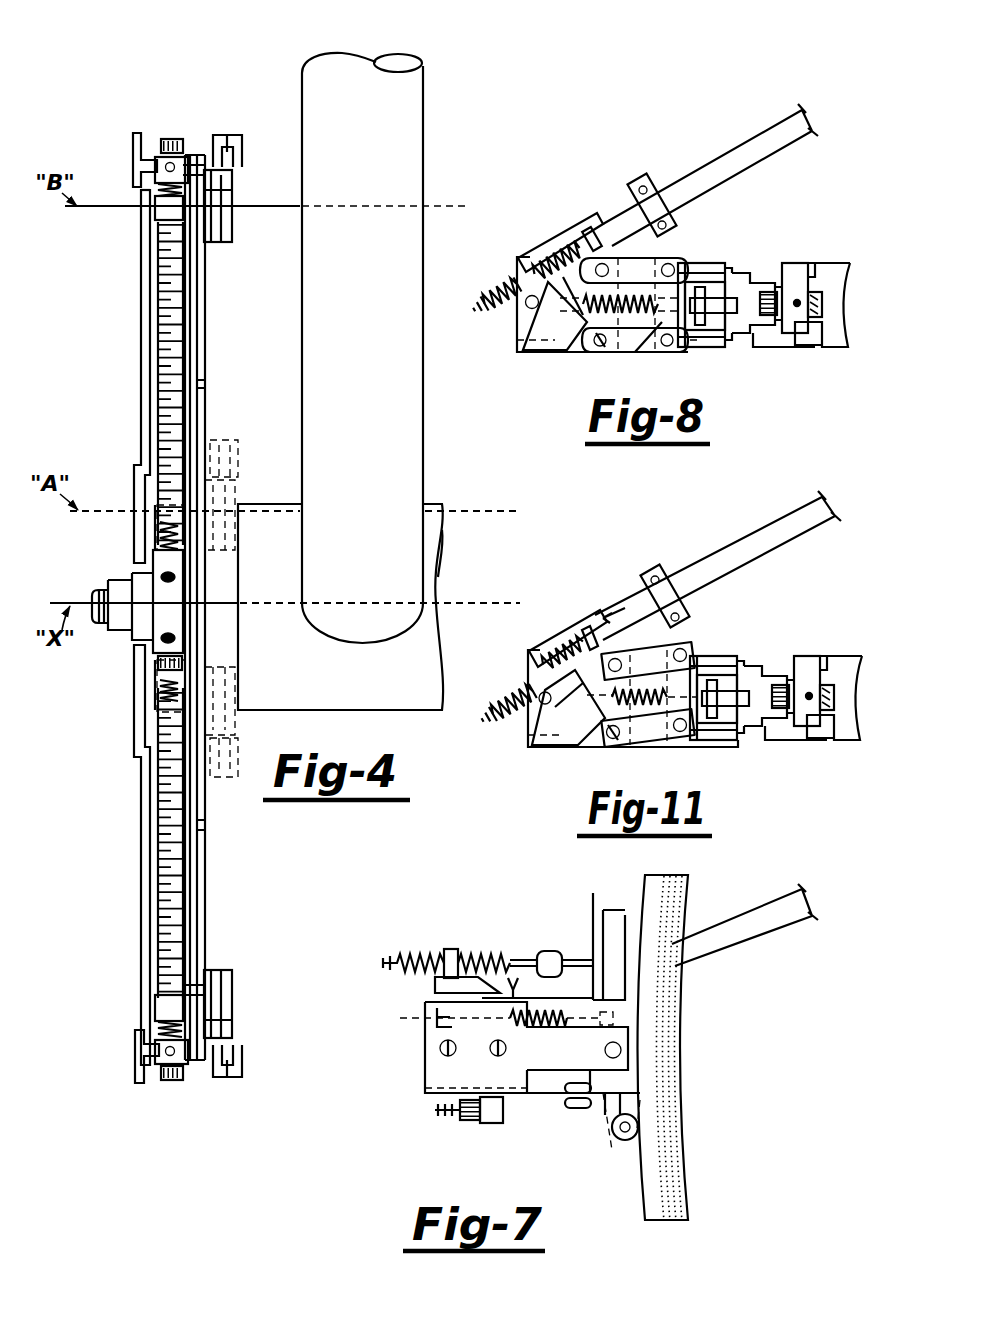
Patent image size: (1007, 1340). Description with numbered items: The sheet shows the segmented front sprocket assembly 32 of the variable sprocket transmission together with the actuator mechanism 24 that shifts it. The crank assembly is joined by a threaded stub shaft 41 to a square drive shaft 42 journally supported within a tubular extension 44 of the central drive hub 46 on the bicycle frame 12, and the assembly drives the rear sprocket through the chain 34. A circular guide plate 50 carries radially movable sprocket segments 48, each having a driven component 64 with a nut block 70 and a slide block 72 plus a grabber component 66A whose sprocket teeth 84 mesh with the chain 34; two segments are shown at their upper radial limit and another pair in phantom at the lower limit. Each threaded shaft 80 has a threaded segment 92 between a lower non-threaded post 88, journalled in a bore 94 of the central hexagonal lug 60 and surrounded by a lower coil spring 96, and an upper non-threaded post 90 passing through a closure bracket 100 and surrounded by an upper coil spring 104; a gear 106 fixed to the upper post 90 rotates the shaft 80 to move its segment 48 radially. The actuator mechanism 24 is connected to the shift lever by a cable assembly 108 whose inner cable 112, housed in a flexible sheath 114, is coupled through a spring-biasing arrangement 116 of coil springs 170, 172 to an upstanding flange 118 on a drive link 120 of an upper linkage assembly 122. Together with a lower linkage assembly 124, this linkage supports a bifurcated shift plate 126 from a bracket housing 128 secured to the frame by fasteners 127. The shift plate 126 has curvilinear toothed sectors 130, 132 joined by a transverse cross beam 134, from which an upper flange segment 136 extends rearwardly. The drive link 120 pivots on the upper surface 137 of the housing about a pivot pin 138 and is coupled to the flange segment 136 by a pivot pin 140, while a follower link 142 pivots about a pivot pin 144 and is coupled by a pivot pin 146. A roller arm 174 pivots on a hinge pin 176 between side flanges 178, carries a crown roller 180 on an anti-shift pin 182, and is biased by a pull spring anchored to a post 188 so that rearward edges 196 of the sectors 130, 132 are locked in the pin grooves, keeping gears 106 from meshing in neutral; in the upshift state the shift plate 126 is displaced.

In FIG. 4, the bicycle frame 12 is at (430, 470).
In FIG. 7, the actuator mechanism 24 is at (404, 1079).
In FIG. 4, the front sprocket assembly 32 is at (124, 118).
In FIG. 4, the chain 34 is at (218, 158).
In FIG. 4, the threaded stub shaft 41 is at (102, 590).
In FIG. 4, the square drive shaft 42 is at (120, 632).
In FIG. 4, the tubular extension 44 is at (235, 632).
In FIG. 4, the central drive hub 46 is at (445, 577).
In FIG. 4, the sprocket segment 48 is at (244, 183).
In FIG. 4, the circular guide plate 50 is at (208, 350).
In FIG. 8, the circular guide plate 50 is at (808, 268).
In FIG. 11, the circular guide plate 50 is at (828, 656).
In FIG. 4, the central hexagonal lug 60 is at (160, 660).
In FIG. 4, the driven component 64 is at (215, 245).
In FIG. 4, the grabber component 66A is at (234, 215).
In FIG. 4, the nut block 70 is at (160, 225).
In FIG. 4, the slide block 72 is at (195, 165).
In FIG. 4, the threaded shaft 80 is at (152, 385).
In FIG. 4, the sprocket teeth 84 is at (238, 148).
In FIG. 4, the lower non-threaded post 88 is at (160, 535).
In FIG. 4, the upper non-threaded post 90 is at (160, 200).
In FIG. 8, the upper non-threaded post 90 is at (810, 312).
In FIG. 11, the upper non-threaded post 90 is at (828, 712).
In FIG. 4, the threaded segment 92 is at (163, 330).
In FIG. 4, the bore 94 is at (176, 577).
In FIG. 4, the lower coil spring 96 is at (167, 530).
In FIG. 4, the closure bracket 100 is at (160, 150).
In FIG. 8, the closure bracket 100 is at (812, 290).
In FIG. 11, the closure bracket 100 is at (825, 668).
In FIG. 4, the upper coil spring 104 is at (150, 170).
In FIG. 8, the upper coil spring 104 is at (838, 325).
In FIG. 11, the upper coil spring 104 is at (862, 740).
In FIG. 4, the gear 106 is at (180, 1080).
In FIG. 8, the gear 106 is at (805, 320).
In FIG. 11, the gear 106 is at (785, 688).
In FIG. 8, the cable assembly 108 is at (728, 130).
In FIG. 11, the cable assembly 108 is at (811, 494).
In FIG. 7, the cable assembly 108 is at (768, 914).
In FIG. 8, the inner cable 112 is at (633, 183).
In FIG. 11, the inner cable 112 is at (665, 590).
In FIG. 7, the inner cable 112 is at (525, 965).
In FIG. 8, the flexible sheath 114 is at (788, 125).
In FIG. 11, the flexible sheath 114 is at (768, 532).
In FIG. 7, the flexible sheath 114 is at (735, 945).
In FIG. 8, the spring-biasing arrangement 116 is at (567, 174).
In FIG. 11, the spring-biasing arrangement 116 is at (570, 619).
In FIG. 7, the spring-biasing arrangement 116 is at (445, 932).
In FIG. 8, the upstanding flange 118 is at (540, 255).
In FIG. 11, the upstanding flange 118 is at (540, 665).
In FIG. 7, the upstanding flange 118 is at (452, 950).
In FIG. 8, the drive link 120 is at (530, 340).
In FIG. 11, the drive link 120 is at (548, 725).
In FIG. 7, the drive link 120 is at (445, 990).
In FIG. 8, the upper linkage assembly 122 is at (611, 360).
In FIG. 11, the upper linkage assembly 122 is at (591, 756).
In FIG. 7, the upper linkage assembly 122 is at (592, 984).
In FIG. 7, the lower linkage assembly 124 is at (530, 1096).
In FIG. 8, the bifurcated shift plate 126 is at (759, 264).
In FIG. 11, the bifurcated shift plate 126 is at (745, 659).
In FIG. 7, the bifurcated shift plate 126 is at (681, 929).
In FIG. 7, the fasteners 127 is at (498, 1057).
In FIG. 8, the bracket housing 128 is at (513, 320).
In FIG. 11, the bracket housing 128 is at (544, 751).
In FIG. 7, the bracket housing 128 is at (424, 1052).
In FIG. 8, the toothed sector 130 is at (755, 325).
In FIG. 11, the toothed sector 130 is at (765, 740).
In FIG. 7, the toothed sector 130 is at (655, 1180).
In FIG. 8, the toothed sector 132 is at (800, 266).
In FIG. 11, the toothed sector 132 is at (775, 670).
In FIG. 8, the transverse cross beam 134 is at (737, 275).
In FIG. 8, the upper flange segment 136 is at (663, 330).
In FIG. 11, the upper flange segment 136 is at (642, 697).
In FIG. 8, the upper surface 137 is at (540, 345).
In FIG. 11, the upper surface 137 is at (535, 700).
In FIG. 8, the pivot pin 138 is at (598, 343).
In FIG. 11, the pivot pin 138 is at (618, 740).
In FIG. 7, the pivot pin 138 is at (520, 972).
In FIG. 7, the pivot pin 140 is at (593, 950).
In FIG. 8, the follower link 142 is at (607, 270).
In FIG. 11, the follower link 142 is at (645, 660).
In FIG. 8, the pivot pin 144 is at (590, 233).
In FIG. 11, the pivot pin 144 is at (590, 638).
In FIG. 8, the pivot pin 146 is at (682, 265).
In FIG. 11, the pivot pin 146 is at (692, 655).
In FIG. 8, the coil spring 170 is at (558, 240).
In FIG. 11, the coil spring 170 is at (597, 630).
In FIG. 7, the coil spring 170 is at (475, 950).
In FIG. 8, the coil spring 172 is at (492, 300).
In FIG. 11, the coil spring 172 is at (512, 690).
In FIG. 7, the coil spring 172 is at (415, 953).
In FIG. 7, the roller arm 174 is at (612, 1105).
In FIG. 7, the hinge pin 176 is at (626, 1052).
In FIG. 7, the side flanges 178 is at (540, 1035).
In FIG. 7, the crown roller 180 is at (625, 1140).
In FIG. 7, the anti-shift pin 182 is at (636, 1127).
In FIG. 7, the post 188 is at (400, 1018).
In FIG. 7, the rearward edges 196 is at (645, 1215).